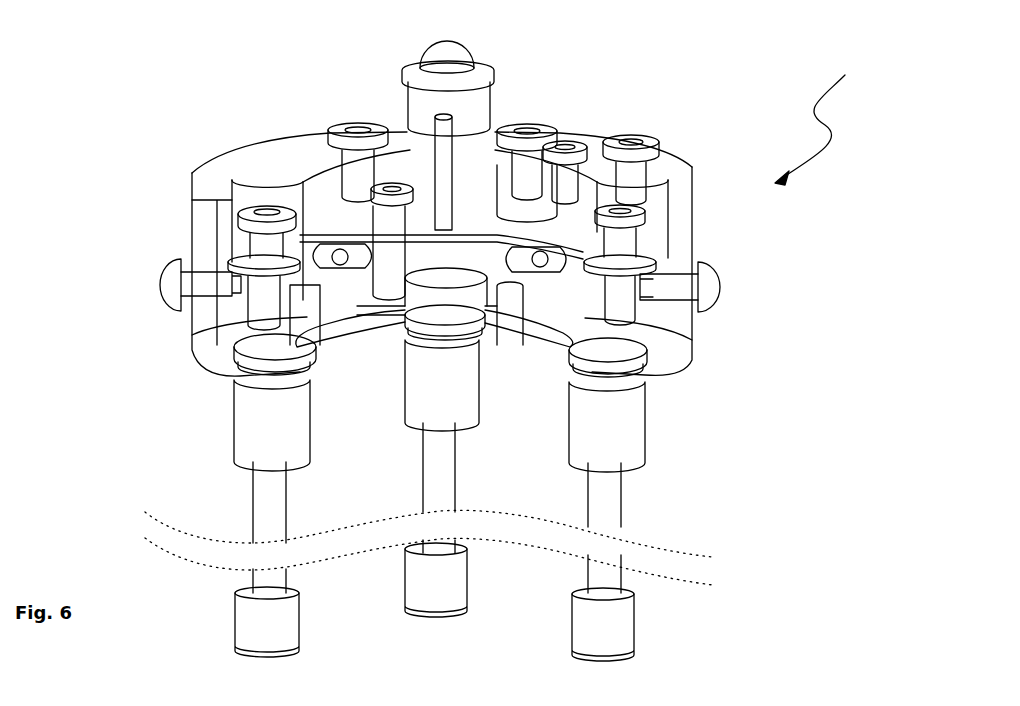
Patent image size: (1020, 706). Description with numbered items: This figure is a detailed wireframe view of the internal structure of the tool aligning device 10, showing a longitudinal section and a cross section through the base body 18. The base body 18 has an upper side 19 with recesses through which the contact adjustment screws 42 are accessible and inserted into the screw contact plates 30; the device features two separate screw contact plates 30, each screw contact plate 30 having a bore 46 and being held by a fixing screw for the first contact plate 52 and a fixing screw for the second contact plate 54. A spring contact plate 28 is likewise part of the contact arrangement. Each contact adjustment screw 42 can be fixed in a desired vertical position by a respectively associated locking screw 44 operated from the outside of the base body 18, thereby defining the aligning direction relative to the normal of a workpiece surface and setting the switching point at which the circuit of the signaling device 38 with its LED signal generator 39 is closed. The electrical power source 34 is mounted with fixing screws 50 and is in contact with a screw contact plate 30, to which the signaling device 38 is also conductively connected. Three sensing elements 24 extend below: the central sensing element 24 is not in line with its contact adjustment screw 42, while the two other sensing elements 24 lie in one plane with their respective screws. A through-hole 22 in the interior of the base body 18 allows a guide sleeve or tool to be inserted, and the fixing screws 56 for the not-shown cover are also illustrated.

The tool aligning device 10 is at (818, 117).
The base body 18 is at (207, 365).
The upper side of base body 19 is at (238, 165).
The through-hole 22 is at (382, 355).
The sensing element 24 is at (277, 522).
The spring contact plate 28 is at (253, 353).
The screw contact plate 30 is at (243, 270).
The electrical power source 34 is at (533, 233).
The signaling device 38 is at (447, 45).
The LED signal generator 39 is at (447, 50).
The contact adjustment screw 42 is at (250, 210).
The locking screw 44 is at (165, 287).
The bore of screw contact plate 46 is at (250, 253).
The fixing screw for battery 50 is at (562, 135).
The fixing screw for first contact plate 52 is at (325, 343).
The fixing screw for second contact plate 54 is at (253, 257).
The fixing screw for cover of base body 56 is at (353, 125).